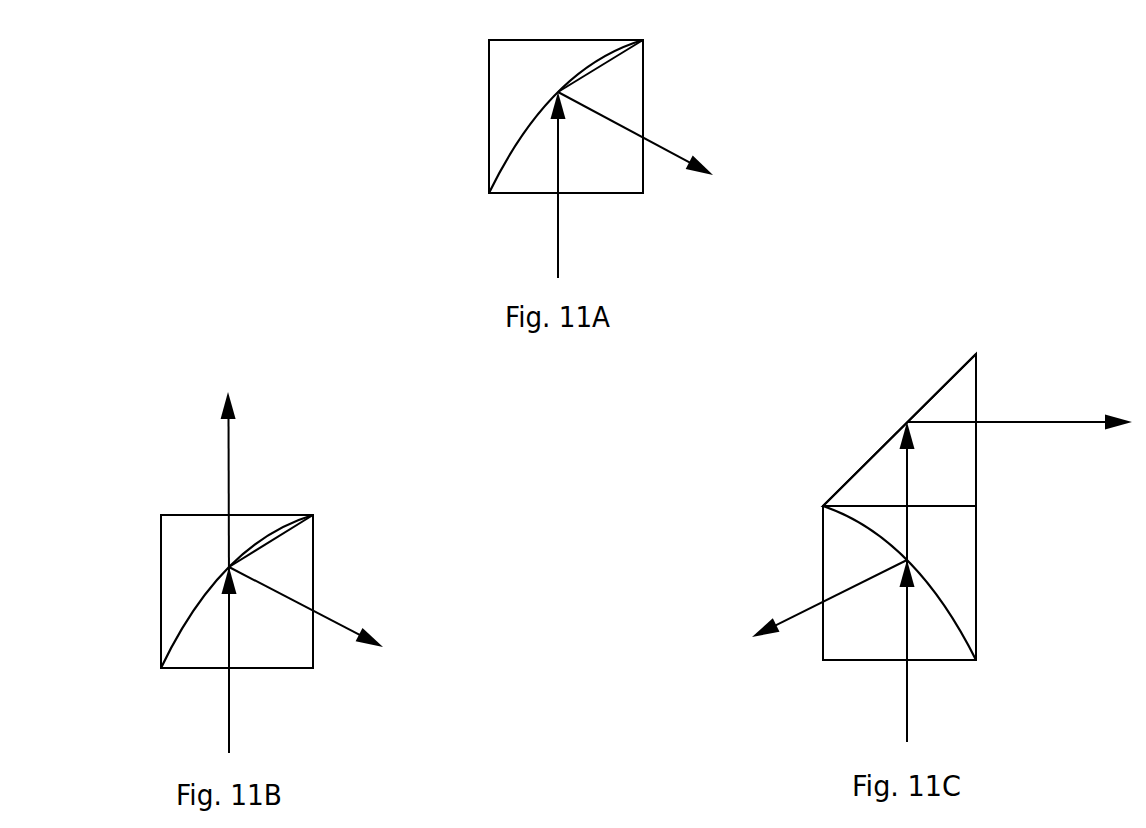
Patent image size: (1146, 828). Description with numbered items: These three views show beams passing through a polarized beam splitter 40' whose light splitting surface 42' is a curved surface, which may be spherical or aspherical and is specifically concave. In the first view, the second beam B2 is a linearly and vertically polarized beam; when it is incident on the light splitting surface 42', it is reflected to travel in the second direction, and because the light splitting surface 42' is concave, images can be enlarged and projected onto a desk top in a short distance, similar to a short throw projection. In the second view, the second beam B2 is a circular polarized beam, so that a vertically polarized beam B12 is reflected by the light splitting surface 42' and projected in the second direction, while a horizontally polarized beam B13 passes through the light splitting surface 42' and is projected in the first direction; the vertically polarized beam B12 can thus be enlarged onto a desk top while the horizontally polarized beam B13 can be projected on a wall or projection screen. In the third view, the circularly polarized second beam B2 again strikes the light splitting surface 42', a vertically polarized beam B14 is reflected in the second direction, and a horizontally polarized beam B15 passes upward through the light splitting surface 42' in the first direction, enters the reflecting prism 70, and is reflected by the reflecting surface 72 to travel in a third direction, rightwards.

In FIG. 11A, the polarized beam splitter 40' is at (503, 116).
In FIG. 11B, the polarized beam splitter 40' is at (224, 542).
In FIG. 11C, the polarized beam splitter 40' is at (817, 583).
In FIG. 11A, the light splitting surface 42' is at (639, 116).
In FIG. 11B, the light splitting surface 42' is at (235, 627).
In FIG. 11C, the light splitting surface 42' is at (965, 587).
In FIG. 11A, the second beam B2 is at (558, 231).
In FIG. 11B, the second beam B2 is at (229, 710).
In FIG. 11C, the second beam B2 is at (908, 703).
In FIG. 11B, the vertically polarized beam B12 is at (333, 618).
In FIG. 11B, the horizontally polarized beam B13 is at (229, 456).
In FIG. 11C, the reflecting prism 70 is at (963, 405).
In FIG. 11C, the reflecting surface 72 is at (863, 465).
In FIG. 11C, the vertically polarized beam B14 is at (837, 603).
In FIG. 11C, the horizontally polarized beam B15 is at (910, 482).